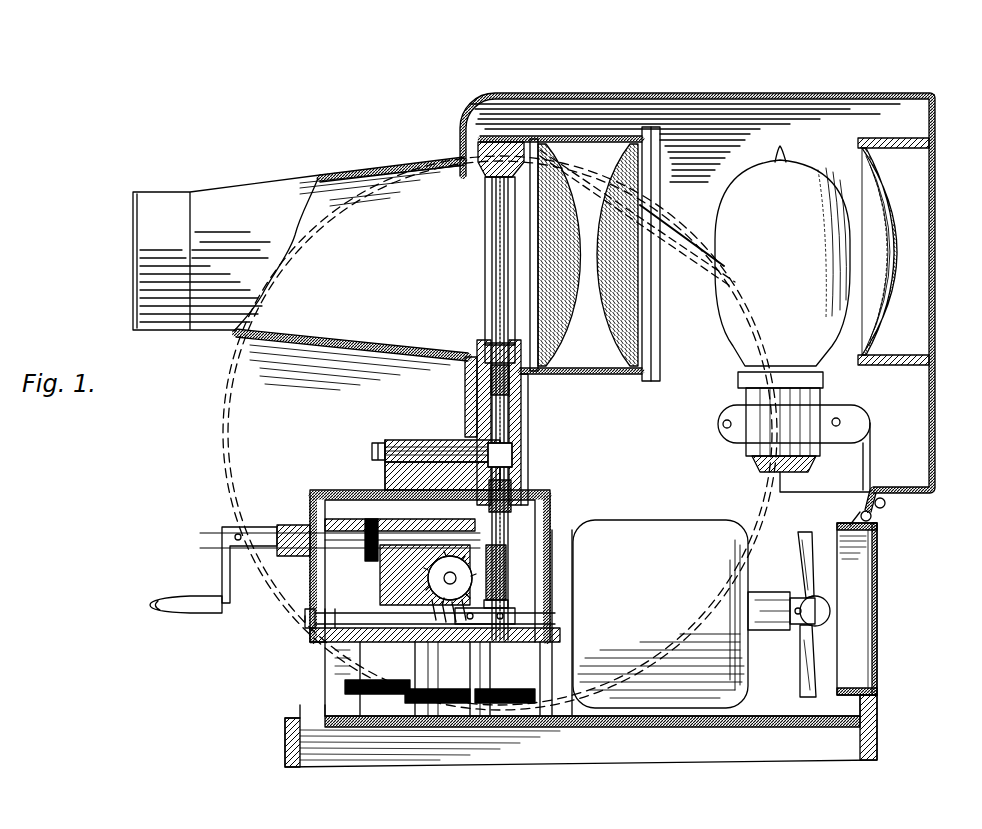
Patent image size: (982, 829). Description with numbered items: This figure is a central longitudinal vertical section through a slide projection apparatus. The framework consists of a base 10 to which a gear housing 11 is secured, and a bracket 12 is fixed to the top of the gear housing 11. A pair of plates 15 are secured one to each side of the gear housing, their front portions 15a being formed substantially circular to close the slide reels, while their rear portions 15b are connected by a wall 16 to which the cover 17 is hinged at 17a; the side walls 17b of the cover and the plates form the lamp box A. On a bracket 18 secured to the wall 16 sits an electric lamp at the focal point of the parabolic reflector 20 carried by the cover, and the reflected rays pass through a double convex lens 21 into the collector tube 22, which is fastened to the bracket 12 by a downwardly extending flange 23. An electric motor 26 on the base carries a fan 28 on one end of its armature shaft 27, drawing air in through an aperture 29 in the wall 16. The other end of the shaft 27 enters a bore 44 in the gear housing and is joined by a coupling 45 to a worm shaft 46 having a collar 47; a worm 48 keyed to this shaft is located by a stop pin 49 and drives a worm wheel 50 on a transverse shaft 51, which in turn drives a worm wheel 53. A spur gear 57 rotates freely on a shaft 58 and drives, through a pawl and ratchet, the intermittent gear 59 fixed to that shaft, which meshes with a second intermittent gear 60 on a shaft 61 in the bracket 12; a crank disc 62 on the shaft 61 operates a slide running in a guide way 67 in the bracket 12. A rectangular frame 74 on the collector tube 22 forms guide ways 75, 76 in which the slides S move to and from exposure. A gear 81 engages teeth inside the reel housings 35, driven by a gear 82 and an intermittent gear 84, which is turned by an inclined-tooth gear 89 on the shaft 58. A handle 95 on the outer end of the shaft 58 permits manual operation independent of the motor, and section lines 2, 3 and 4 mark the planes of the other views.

The section line 2- 2 is at (548, 136).
The section line 3- 3 is at (497, 112).
The section line 4- 4 is at (222, 538).
The base 10 is at (782, 256).
The gear housing 11 is at (310, 600).
The bracket 12 is at (447, 440).
The plates 15 is at (700, 203).
The front portions 15a is at (500, 433).
The rear portions 15b is at (815, 494).
The wall 16 is at (872, 522).
The cover 17 is at (700, 92).
The hinge 17a is at (888, 506).
The side walls 17b is at (820, 132).
The bracket 18 is at (871, 455).
The parabolic reflector 20 is at (910, 258).
The double convex lens 21 is at (588, 255).
The collector tube 22 is at (340, 176).
The flange 23 is at (465, 400).
The electric motor 26 is at (681, 614).
The armature shaft 27 is at (550, 622).
The fan 28 is at (800, 578).
The aperture 29 is at (862, 604).
The reel housings 35 is at (762, 502).
The bore 44 is at (550, 612).
The coupling 45 is at (550, 636).
The worm shaft 46 is at (432, 679).
The collar 47 is at (510, 593).
The worm 48 is at (458, 679).
The stop pin 49 is at (312, 628).
The worm wheel 50 is at (424, 582).
The transverse shaft 51 is at (432, 586).
The worm wheel 53 is at (310, 572).
The spur gear 57 is at (522, 492).
The shaft 58 is at (412, 530).
The intermittent gear 59 is at (510, 572).
The intermittent gear 60 is at (512, 458).
The shaft 61 is at (380, 450).
The crank disc 62 is at (522, 420).
The guide way 67 is at (477, 383).
The rectangular frame 74 is at (515, 222).
The guide way 75 is at (482, 186).
The guide way 76 is at (487, 342).
The gear 81 is at (497, 704).
The gear 82 is at (455, 704).
The intermittent gear 84 is at (377, 695).
The gear 89 is at (365, 546).
The handle 95 is at (222, 576).
The lamp box A is at (800, 128).
The slides S is at (492, 258).